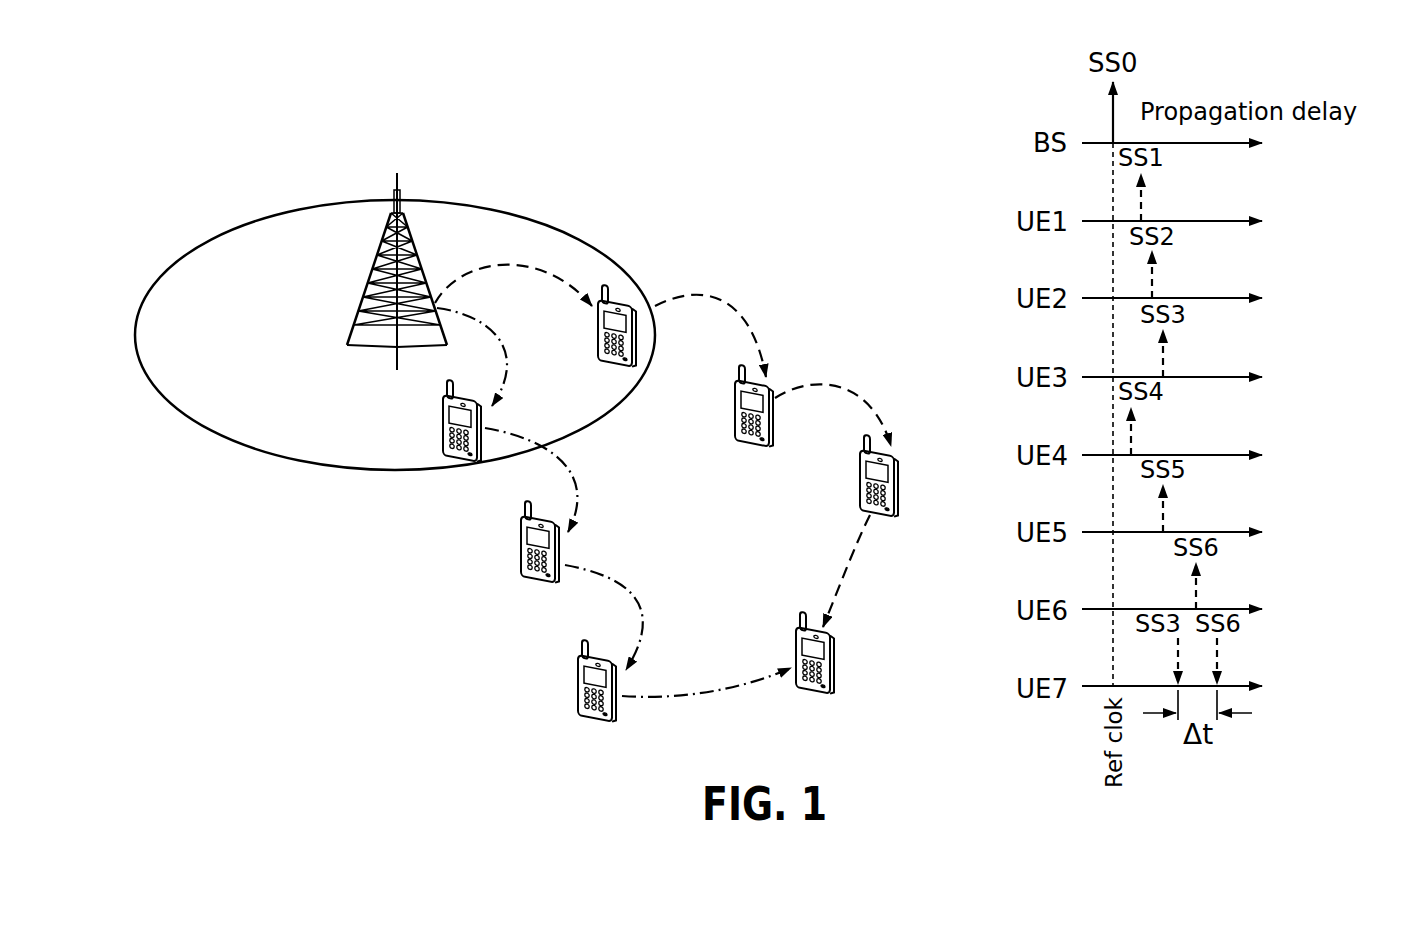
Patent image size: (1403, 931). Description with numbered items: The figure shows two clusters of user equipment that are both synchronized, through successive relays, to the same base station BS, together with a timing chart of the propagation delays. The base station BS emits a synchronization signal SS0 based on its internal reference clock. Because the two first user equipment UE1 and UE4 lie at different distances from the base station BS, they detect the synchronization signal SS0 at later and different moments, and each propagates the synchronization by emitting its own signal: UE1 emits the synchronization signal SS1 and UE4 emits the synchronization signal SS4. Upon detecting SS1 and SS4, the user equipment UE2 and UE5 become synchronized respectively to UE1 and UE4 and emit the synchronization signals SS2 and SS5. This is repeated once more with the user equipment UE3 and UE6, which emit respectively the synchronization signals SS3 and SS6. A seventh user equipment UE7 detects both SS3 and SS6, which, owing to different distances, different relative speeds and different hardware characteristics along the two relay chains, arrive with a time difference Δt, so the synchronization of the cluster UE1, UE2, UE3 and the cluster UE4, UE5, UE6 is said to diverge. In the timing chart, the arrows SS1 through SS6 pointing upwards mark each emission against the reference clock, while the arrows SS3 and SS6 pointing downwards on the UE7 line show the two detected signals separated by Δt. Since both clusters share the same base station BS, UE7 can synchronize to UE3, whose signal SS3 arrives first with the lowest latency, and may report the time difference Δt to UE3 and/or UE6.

The base station BS is at (378, 259).
The user equipment UE1 is at (445, 448).
The user equipment UE2 is at (523, 575).
The user equipment UE3 is at (580, 710).
The user equipment UE4 is at (598, 330).
The user equipment UE5 is at (735, 412).
The user equipment UE6 is at (933, 497).
The user equipment UE7 is at (872, 681).
The synchronization signal SS0 is at (513, 335).
The synchronization signal SS1 is at (531, 480).
The synchronization signal SS2 is at (604, 617).
The synchronization signal SS3 is at (706, 699).
The synchronization signal SS4 is at (710, 336).
The synchronization signal SS5 is at (833, 415).
The synchronization signal SS6 is at (861, 571).